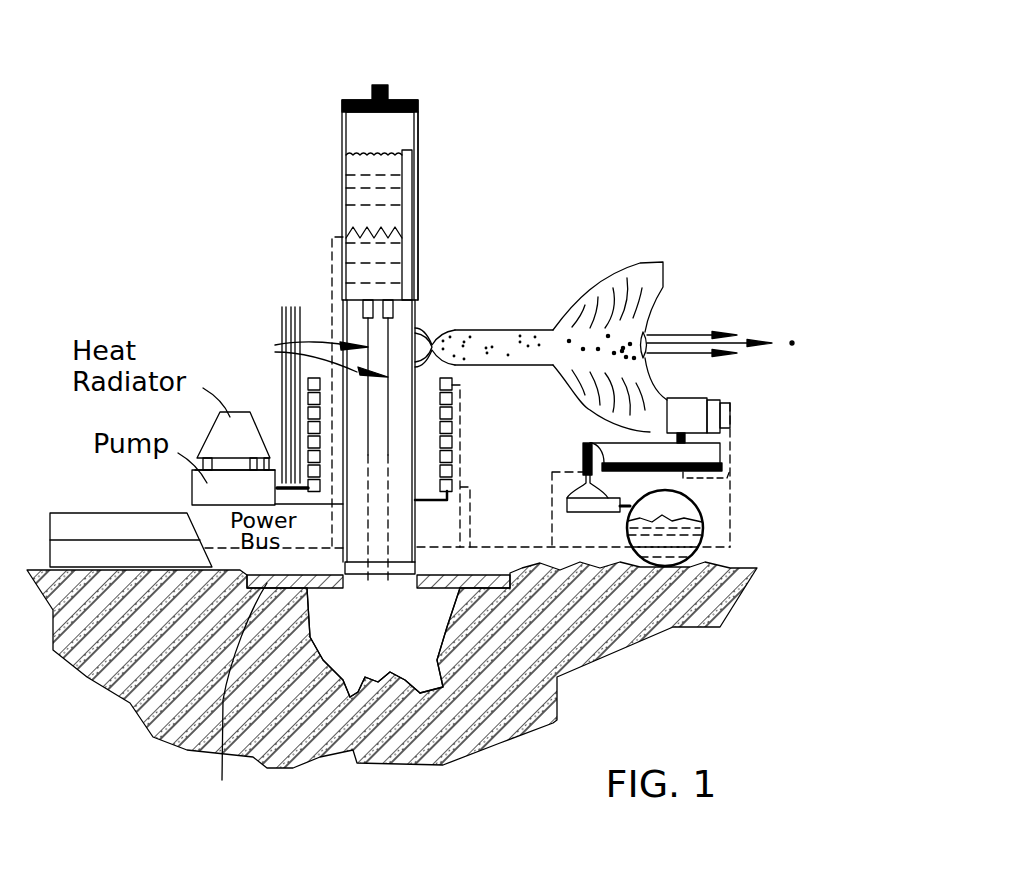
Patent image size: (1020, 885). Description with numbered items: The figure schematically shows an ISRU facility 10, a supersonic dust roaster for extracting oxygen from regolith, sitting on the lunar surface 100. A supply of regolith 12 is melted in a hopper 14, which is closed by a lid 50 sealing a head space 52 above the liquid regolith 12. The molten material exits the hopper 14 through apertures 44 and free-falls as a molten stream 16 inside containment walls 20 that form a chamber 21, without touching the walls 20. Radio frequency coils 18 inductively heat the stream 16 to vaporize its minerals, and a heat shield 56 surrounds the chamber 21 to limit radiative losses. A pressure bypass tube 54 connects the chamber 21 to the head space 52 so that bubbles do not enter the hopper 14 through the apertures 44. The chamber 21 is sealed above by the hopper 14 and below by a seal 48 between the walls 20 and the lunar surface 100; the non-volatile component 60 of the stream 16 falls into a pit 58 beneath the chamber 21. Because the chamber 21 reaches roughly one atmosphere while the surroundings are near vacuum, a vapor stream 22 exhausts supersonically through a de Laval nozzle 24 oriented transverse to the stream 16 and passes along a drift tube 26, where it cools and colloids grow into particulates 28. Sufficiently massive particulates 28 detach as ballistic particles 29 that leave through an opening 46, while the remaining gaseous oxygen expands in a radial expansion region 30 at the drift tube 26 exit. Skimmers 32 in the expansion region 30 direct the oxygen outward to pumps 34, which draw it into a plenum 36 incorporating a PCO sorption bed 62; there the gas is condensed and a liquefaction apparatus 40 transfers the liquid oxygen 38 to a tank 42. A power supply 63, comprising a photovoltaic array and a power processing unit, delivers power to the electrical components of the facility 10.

The ISRU facility 10 is at (308, 78).
The regolith 12 is at (358, 167).
The hopper 14 is at (418, 167).
The molten stream 16 is at (314, 357).
The radio frequency coils 18 is at (450, 470).
The containment walls 20 is at (343, 317).
The chamber 21 is at (403, 427).
The vapor stream 22 is at (472, 347).
The de Laval nozzle 24 is at (432, 330).
The drift tube 26 is at (522, 327).
The particulates 28 is at (640, 327).
The ballistic particles 29 is at (794, 347).
The radial expansion region 30 is at (672, 249).
The skimmers 32 is at (630, 293).
The pumps 34 is at (702, 407).
The plenum 36 is at (635, 447).
The liquid oxygen 38 is at (693, 538).
The liquefaction apparatus 40 is at (603, 512).
The tank 42 is at (693, 522).
The apertures 44 is at (397, 300).
The opening 46 is at (647, 358).
The seal 48 is at (232, 697).
The lid 50 is at (393, 103).
The head space 52 is at (358, 130).
The pressure bypass tube 54 is at (410, 200).
The heat shield 56 is at (280, 317).
The pit 58 is at (405, 642).
The non-volatile component 60 is at (390, 692).
The PCO sorption bed 62 is at (583, 447).
The power supply 63 is at (76, 500).
The lunar surface 100 is at (587, 660).